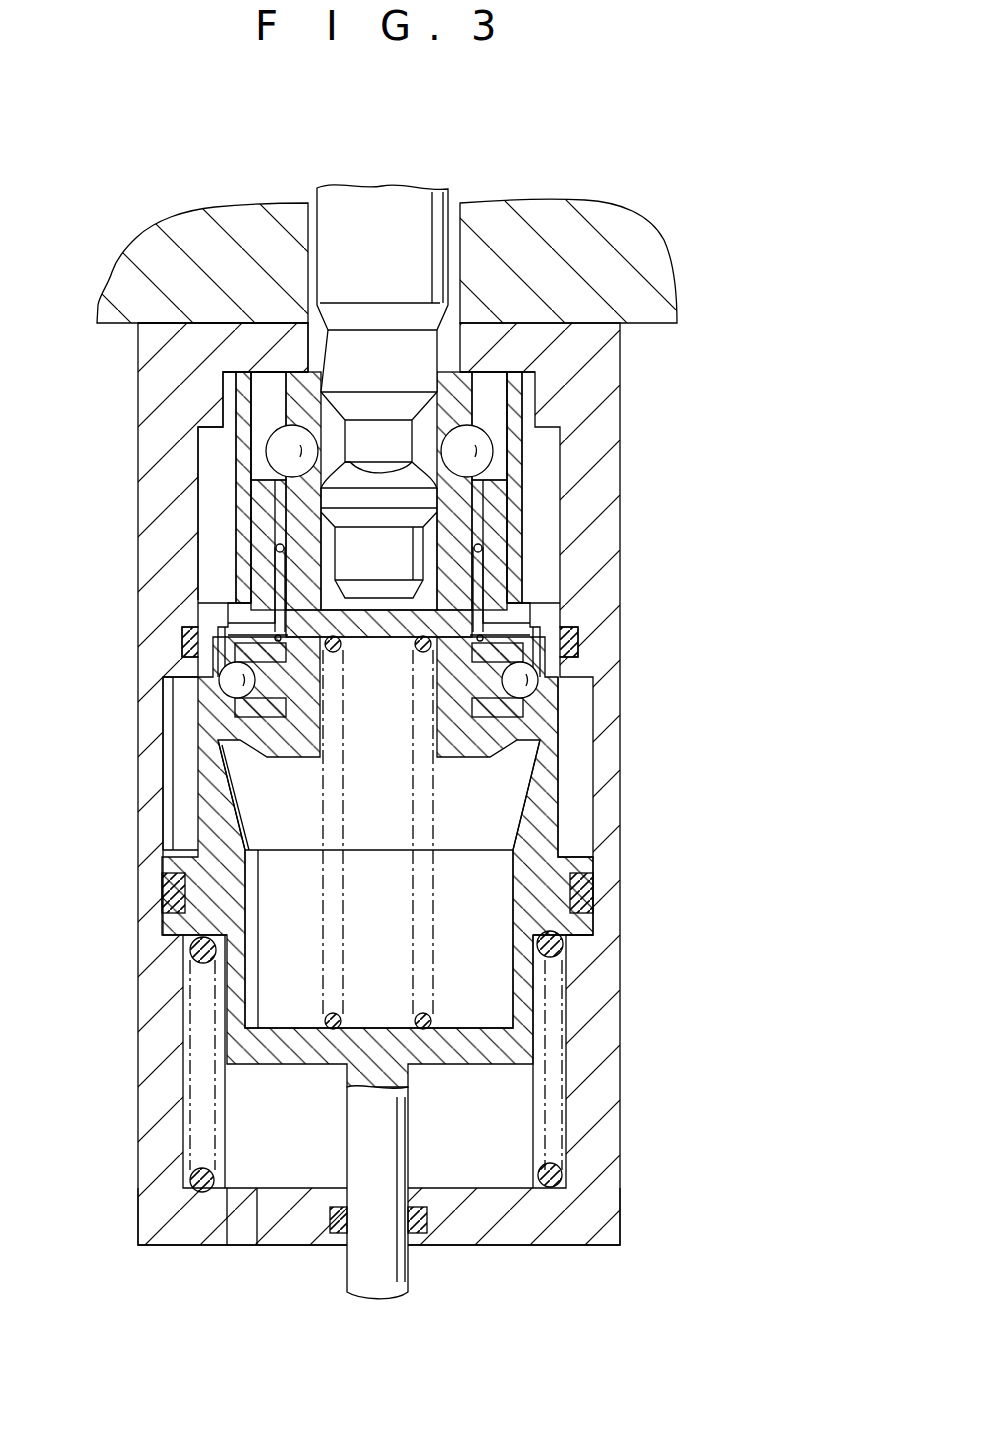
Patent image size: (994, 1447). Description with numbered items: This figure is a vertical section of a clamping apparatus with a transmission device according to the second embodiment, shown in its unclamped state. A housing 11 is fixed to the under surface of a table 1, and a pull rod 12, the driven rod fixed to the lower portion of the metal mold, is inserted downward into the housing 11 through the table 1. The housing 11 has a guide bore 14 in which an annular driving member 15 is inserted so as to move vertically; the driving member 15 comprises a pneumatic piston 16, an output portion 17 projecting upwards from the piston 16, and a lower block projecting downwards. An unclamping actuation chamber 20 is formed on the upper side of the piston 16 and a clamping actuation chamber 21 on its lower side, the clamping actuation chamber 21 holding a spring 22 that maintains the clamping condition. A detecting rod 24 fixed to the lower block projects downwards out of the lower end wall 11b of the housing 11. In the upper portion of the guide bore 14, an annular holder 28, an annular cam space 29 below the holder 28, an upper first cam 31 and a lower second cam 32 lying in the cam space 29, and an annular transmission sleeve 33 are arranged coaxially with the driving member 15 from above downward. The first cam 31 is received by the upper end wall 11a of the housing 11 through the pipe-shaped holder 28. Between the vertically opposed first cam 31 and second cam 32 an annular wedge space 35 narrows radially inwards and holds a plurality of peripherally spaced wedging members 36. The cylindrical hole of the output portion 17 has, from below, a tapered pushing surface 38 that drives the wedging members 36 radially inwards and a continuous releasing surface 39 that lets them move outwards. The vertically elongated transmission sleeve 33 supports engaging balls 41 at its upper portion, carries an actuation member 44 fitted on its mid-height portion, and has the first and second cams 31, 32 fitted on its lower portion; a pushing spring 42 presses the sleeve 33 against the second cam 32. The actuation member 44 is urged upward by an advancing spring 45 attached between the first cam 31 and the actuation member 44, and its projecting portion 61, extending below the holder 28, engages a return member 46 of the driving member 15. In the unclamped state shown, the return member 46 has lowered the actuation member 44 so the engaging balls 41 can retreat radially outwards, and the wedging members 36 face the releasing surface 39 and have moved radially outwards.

The table 1 is at (612, 230).
The housing 11 is at (636, 974).
The upper end wall 11a is at (210, 342).
The lower end wall 11b is at (505, 1248).
The pull rod 12 is at (346, 196).
The guide bore 14 is at (595, 796).
The driving member 15 is at (608, 864).
The pneumatic piston 16 is at (162, 862).
The output portion 17 is at (176, 788).
The unclamping actuation chamber 20 is at (176, 716).
The clamping actuation chamber 21 is at (195, 1058).
The spring 22 is at (192, 948).
The detecting rod 24 is at (358, 1272).
The holder 28 is at (520, 382).
The cam space 29 is at (470, 660).
The first cam 31 is at (580, 640).
The second cam 32 is at (528, 746).
The transmission sleeve 33 is at (466, 772).
The wedge space 35 is at (470, 703).
The wedging members 36 is at (540, 688).
The tapered pushing surface 38 is at (236, 798).
The releasing surface 39 is at (212, 662).
The engaging balls 41 is at (478, 440).
The pushing spring 42 is at (422, 1014).
The actuation member 44 is at (500, 500).
The advancing spring 45 is at (486, 548).
The return member 46 is at (545, 630).
The projecting portion 61 is at (522, 600).